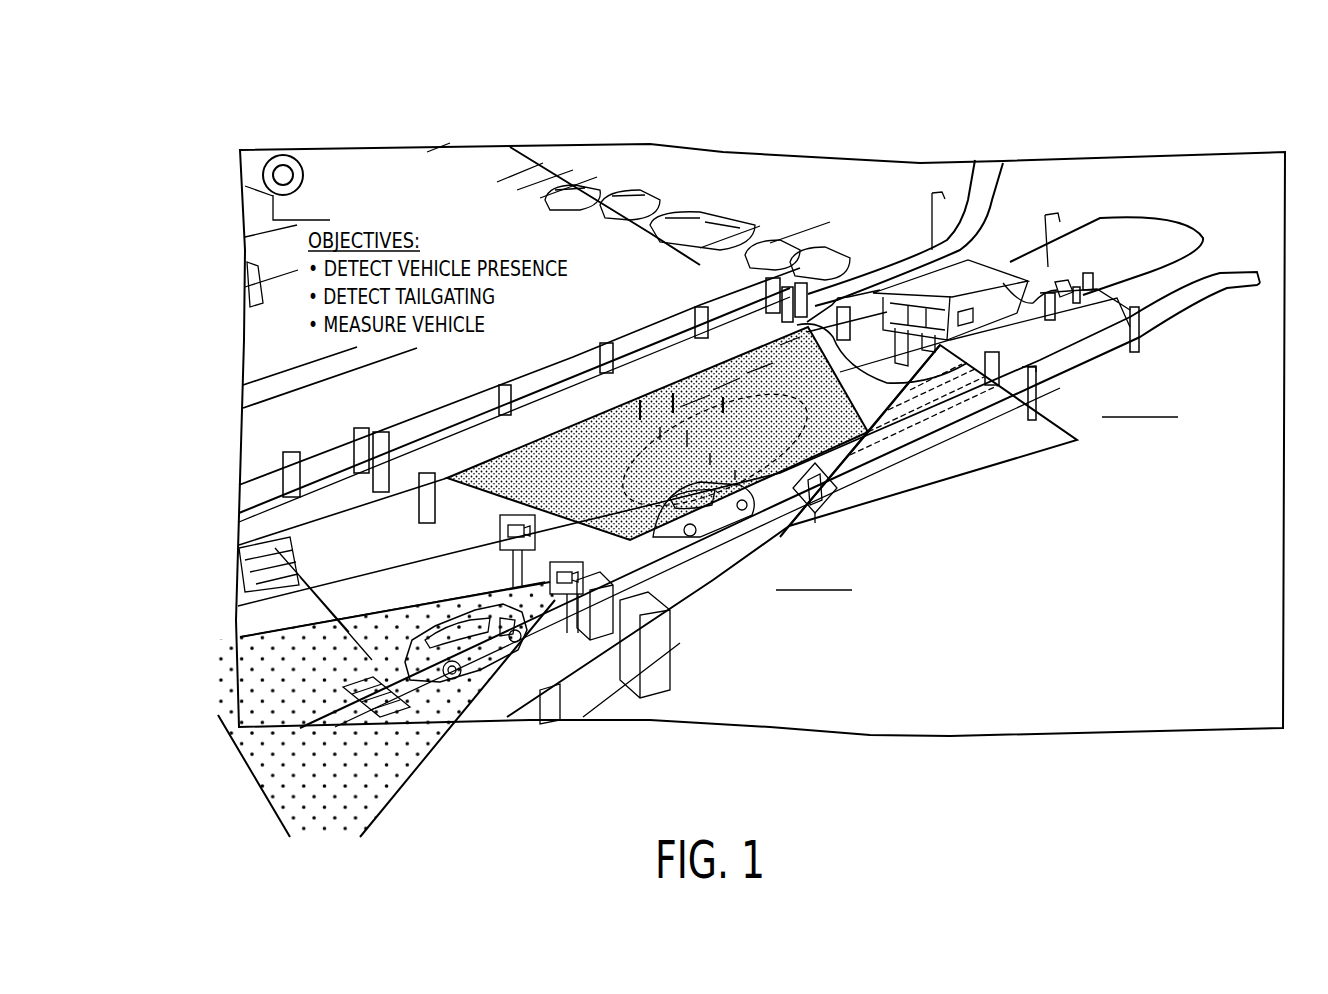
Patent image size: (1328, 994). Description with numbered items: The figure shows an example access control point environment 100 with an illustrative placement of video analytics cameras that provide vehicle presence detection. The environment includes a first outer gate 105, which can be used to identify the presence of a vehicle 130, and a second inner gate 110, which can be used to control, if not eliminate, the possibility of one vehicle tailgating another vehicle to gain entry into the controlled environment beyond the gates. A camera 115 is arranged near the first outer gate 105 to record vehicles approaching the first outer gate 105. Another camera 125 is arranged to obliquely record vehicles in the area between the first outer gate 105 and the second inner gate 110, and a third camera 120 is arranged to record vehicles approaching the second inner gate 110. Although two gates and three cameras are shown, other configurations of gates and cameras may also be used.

The access control point environment 100 is at (314, 124).
The first outer gate 105 is at (855, 665).
The second inner gate 110 is at (1263, 420).
The camera 115 is at (250, 668).
The third camera 120 is at (997, 433).
The camera 125 is at (500, 445).
The vehicle 130 is at (512, 663).